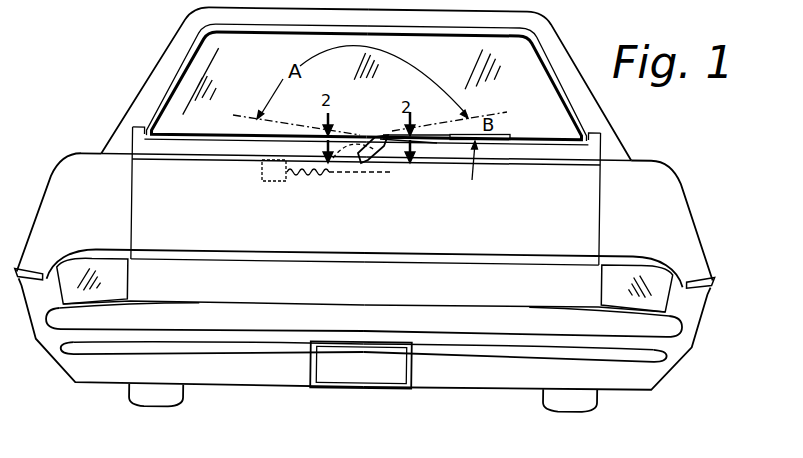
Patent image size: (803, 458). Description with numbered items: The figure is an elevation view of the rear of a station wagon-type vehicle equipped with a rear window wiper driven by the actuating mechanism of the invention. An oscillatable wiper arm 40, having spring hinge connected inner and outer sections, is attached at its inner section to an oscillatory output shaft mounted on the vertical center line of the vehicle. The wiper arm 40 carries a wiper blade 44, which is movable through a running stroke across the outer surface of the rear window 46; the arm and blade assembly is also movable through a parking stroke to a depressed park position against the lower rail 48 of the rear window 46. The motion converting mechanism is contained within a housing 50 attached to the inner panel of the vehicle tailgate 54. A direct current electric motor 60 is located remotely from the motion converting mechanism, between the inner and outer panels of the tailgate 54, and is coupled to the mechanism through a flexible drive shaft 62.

The wiper arm 40 is at (437, 141).
The wiper blade 44 is at (503, 137).
The rear window 46 is at (183, 130).
The lower rail 48 is at (567, 144).
The housing 50 is at (393, 172).
The tailgate 54 is at (131, 209).
The electric motor 60 is at (262, 173).
The flexible drive shaft 62 is at (318, 174).